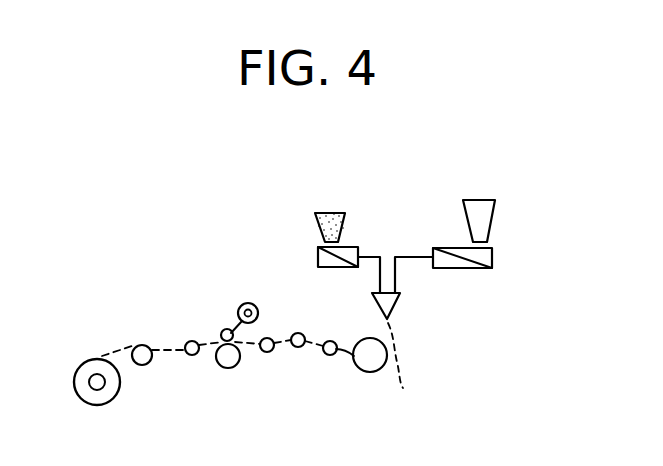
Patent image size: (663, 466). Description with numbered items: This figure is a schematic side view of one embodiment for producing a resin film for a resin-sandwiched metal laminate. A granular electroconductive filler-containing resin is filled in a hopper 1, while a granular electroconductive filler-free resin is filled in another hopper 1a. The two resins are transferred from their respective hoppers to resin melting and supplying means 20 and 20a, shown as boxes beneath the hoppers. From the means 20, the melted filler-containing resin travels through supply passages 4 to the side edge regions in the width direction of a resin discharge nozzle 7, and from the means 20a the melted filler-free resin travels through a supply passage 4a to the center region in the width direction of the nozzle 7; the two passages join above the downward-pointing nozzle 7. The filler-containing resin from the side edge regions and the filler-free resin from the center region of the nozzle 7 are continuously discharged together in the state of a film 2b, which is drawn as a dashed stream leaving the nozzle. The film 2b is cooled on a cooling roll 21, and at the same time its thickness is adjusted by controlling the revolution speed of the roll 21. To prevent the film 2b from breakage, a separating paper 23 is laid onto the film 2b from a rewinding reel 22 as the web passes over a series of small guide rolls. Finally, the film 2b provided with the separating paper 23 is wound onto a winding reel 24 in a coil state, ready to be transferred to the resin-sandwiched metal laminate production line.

The hopper 1 is at (328, 212).
The hopper 1a is at (480, 200).
The resin melting and supplying means 20 is at (318, 258).
The resin melting and supplying means 20a is at (492, 252).
The supply passages 4 is at (379, 278).
The supply passage 4a is at (397, 276).
The resin discharge nozzle 7 is at (396, 304).
The film 2b is at (419, 364).
The cooling roll 21 is at (371, 372).
The rewinding reel 22 is at (240, 306).
The separating paper 23 is at (275, 297).
The winding reel 24 is at (95, 382).